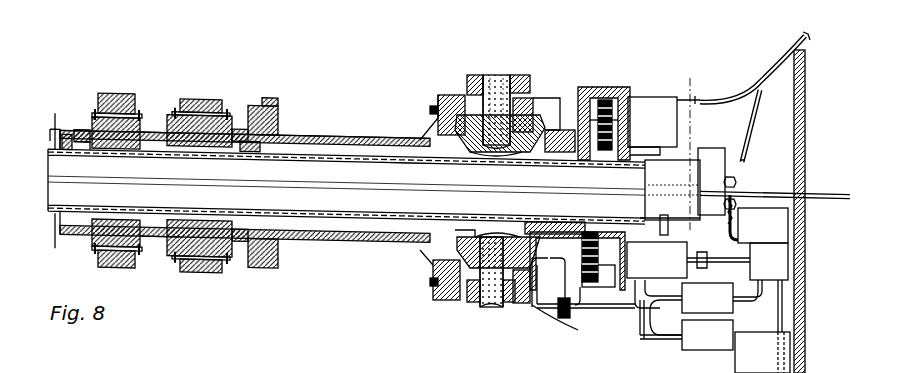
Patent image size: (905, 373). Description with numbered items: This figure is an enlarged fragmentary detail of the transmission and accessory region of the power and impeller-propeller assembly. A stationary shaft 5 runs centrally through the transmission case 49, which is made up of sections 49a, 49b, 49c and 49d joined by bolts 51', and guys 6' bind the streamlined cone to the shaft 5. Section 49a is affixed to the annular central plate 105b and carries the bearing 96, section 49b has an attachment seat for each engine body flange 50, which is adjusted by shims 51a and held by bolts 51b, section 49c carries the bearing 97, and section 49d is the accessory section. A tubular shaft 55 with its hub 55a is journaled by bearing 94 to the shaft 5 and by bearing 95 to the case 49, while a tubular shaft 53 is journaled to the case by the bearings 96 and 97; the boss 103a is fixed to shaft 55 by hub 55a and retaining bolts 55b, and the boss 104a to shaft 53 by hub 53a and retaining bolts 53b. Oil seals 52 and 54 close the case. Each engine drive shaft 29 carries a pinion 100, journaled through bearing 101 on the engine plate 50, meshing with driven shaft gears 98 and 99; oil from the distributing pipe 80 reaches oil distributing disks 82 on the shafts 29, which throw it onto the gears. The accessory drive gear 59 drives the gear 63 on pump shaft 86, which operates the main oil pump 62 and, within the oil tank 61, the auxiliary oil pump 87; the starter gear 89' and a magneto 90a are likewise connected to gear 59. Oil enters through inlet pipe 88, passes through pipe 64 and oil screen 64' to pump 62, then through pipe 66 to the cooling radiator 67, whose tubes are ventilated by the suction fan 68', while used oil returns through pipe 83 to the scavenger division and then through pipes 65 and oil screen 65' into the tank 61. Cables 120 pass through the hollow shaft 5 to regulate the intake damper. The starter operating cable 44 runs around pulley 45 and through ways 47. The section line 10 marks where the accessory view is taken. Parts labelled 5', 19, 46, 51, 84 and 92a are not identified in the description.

The stationary shaft 5 is at (346, 186).
The shaft bore 5' is at (75, 190).
The guys 6' is at (52, 180).
The section line 10 is at (505, 71).
The wall 19 is at (794, 158).
The engine drive shaft 29 is at (486, 70).
The operating cable 44 is at (690, 96).
The pulley 45 is at (533, 310).
The pipe 46 is at (580, 294).
The ways 47 is at (740, 98).
The transmission case 49 is at (378, 238).
The transmission case section 49a is at (410, 133).
The transmission case section 49b is at (438, 108).
The transmission case section 49c is at (565, 110).
The accessory section 49d is at (595, 88).
The engine body flange 50 is at (240, 146).
The flange 51 is at (434, 275).
The bolts 51' is at (418, 196).
The shims 51a is at (440, 292).
The bolts 51b is at (445, 300).
The oil seal 52 is at (67, 148).
The tubular shaft 53 is at (150, 225).
The hub 53a is at (232, 252).
The retaining bolts 53b is at (166, 252).
The oil seal 54 is at (152, 147).
The tubular shaft 55 is at (303, 233).
The hub 55a is at (90, 232).
The retaining bolts 55b is at (92, 246).
The accessory drive gear 59 is at (600, 220).
The oil tank 61 is at (762, 352).
The oil pump 62 is at (657, 260).
The gear 63 is at (598, 259).
The pipe 64 is at (747, 300).
The oil screen 64' is at (707, 298).
The pipes 65 is at (661, 324).
The oil screen 65' is at (707, 335).
The pipe 66 is at (660, 220).
The cooling radiator 67 is at (690, 176).
The suction fan 68' is at (711, 181).
The distributing pipe 80 is at (500, 155).
The oil distributing disks 82 is at (540, 160).
The pipe 83 is at (590, 306).
The gear box 84 is at (652, 122).
The oil pump shaft 86 is at (742, 228).
The auxiliary oil pump 87 is at (737, 261).
The oil inlet pipe 88 is at (778, 322).
The starter gear 89' is at (621, 125).
The magneto 90a is at (644, 144).
The axis line 92a is at (672, 142).
The bearing 94 is at (82, 142).
The bearing 95 is at (565, 160).
The bearing 96 is at (250, 147).
The bearing 97 is at (405, 173).
The driven shaft gear 98 is at (552, 216).
The driven shaft gear 99 is at (455, 228).
The engine pinion 100 is at (470, 155).
The bearing 101 is at (516, 76).
The boss 103a is at (105, 256).
The boss 104a is at (198, 262).
The annular central plate 105b is at (262, 262).
The cables 120 is at (322, 182).